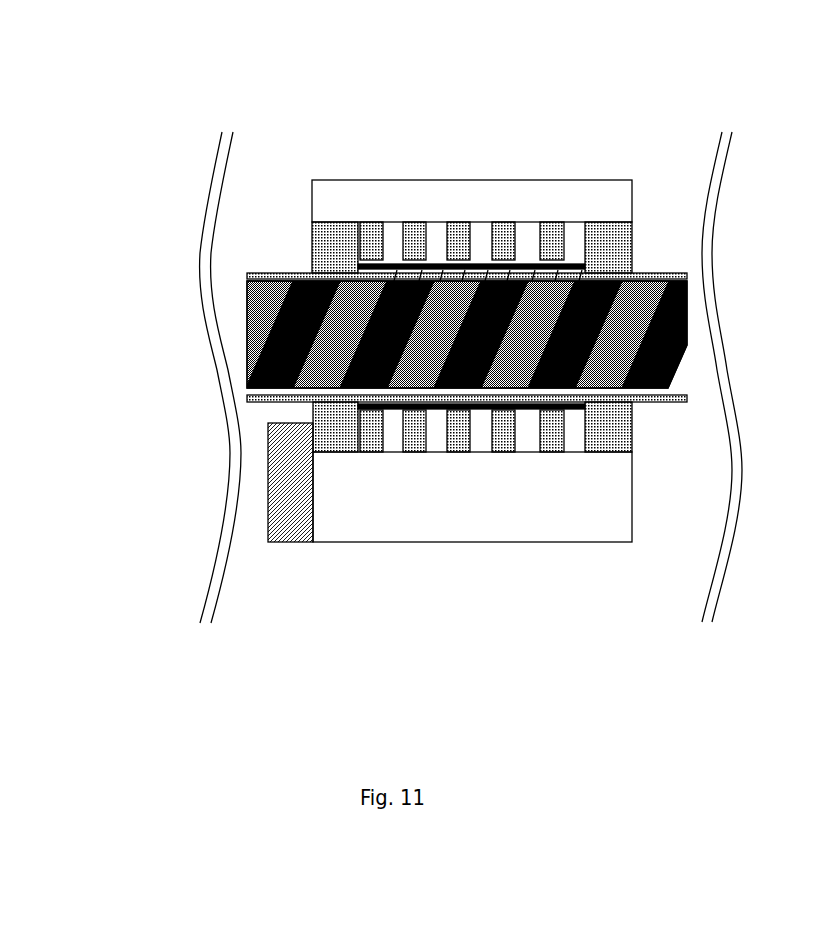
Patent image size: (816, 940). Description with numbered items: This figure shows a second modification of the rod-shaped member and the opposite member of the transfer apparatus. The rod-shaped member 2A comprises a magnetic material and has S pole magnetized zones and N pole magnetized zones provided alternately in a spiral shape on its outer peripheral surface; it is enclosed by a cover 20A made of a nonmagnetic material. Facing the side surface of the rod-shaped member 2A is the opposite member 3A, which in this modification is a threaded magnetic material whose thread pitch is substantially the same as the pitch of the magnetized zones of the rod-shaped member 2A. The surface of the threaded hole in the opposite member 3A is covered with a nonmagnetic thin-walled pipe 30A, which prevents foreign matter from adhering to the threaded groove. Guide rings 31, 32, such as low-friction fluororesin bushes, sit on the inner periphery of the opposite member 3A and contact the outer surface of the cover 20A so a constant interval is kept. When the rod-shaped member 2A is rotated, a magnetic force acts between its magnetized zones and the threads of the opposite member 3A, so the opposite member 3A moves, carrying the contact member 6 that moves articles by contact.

The cover 20A is at (474, 140).
The opposite member 3A is at (483, 210).
The guide ring 32 is at (330, 236).
The guide ring 31 is at (605, 250).
The rod-shaped member 2A is at (247, 328).
The nonmagnetic thin-walled pipe 30A is at (395, 408).
The contact member 6 is at (290, 537).